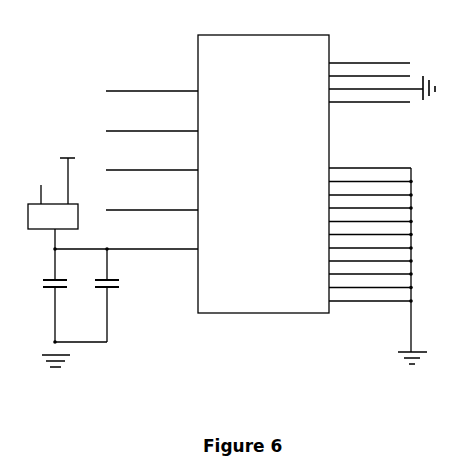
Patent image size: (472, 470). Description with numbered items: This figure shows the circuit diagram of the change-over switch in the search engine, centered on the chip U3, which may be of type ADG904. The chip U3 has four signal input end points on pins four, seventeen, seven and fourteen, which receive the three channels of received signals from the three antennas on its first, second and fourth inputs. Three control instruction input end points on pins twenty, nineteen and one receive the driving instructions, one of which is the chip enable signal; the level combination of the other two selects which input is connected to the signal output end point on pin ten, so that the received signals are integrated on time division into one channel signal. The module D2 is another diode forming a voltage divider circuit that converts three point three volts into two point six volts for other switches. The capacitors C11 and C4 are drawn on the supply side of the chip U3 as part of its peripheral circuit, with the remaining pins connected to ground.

The chip of the change-over switch U3 is at (270, 193).
The module D2 (diode) D2 is at (60, 202).
The capacitor C11 is at (64, 284).
The capacitor C4 is at (112, 284).